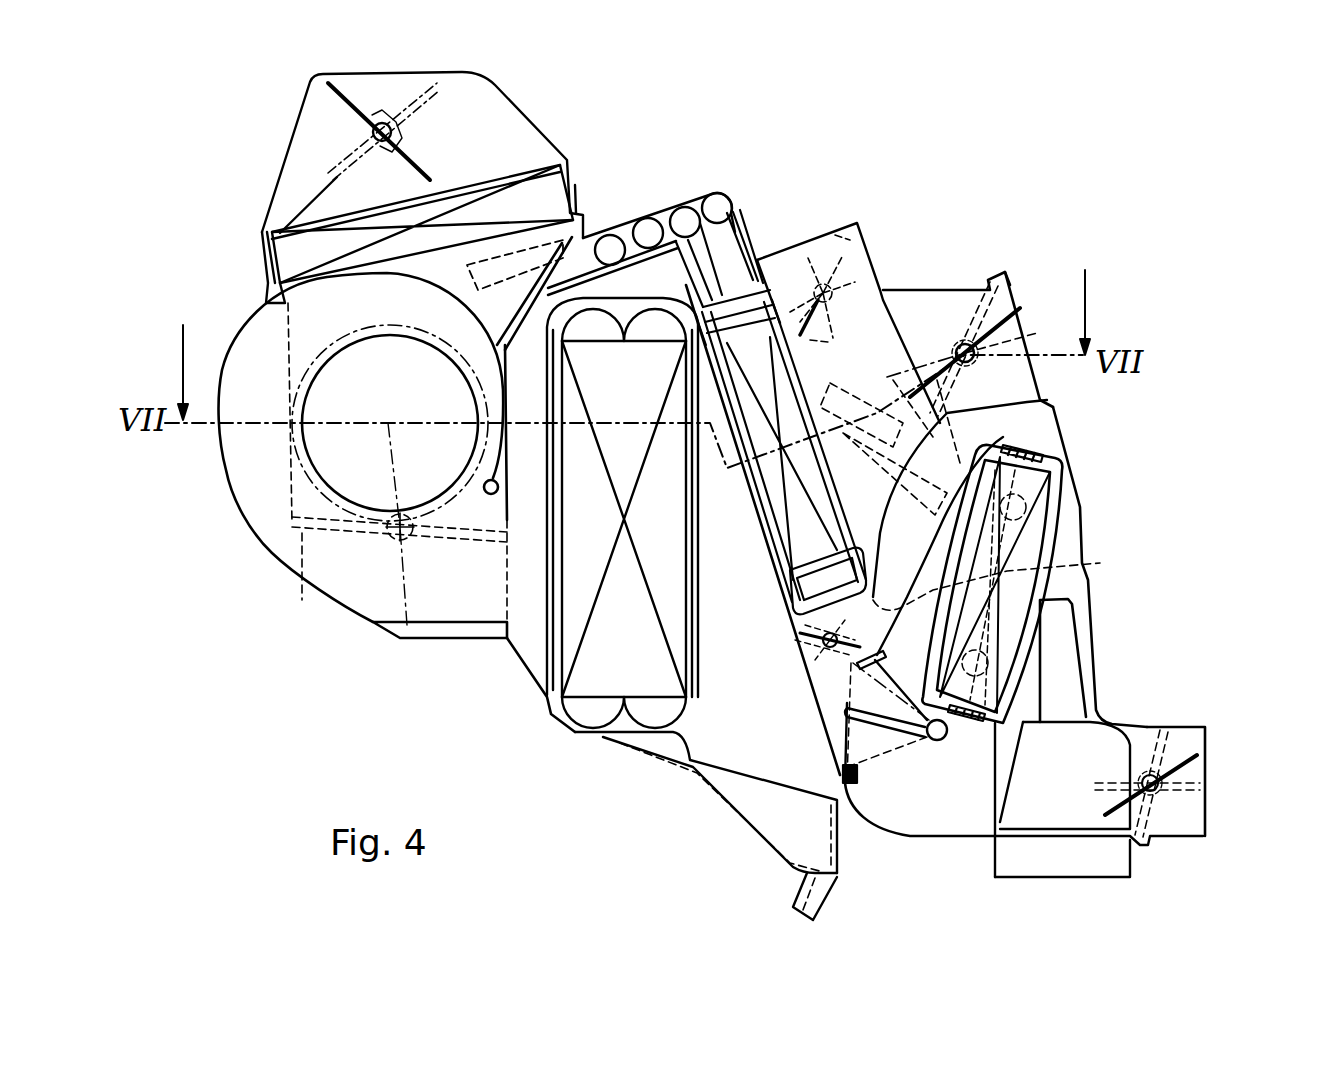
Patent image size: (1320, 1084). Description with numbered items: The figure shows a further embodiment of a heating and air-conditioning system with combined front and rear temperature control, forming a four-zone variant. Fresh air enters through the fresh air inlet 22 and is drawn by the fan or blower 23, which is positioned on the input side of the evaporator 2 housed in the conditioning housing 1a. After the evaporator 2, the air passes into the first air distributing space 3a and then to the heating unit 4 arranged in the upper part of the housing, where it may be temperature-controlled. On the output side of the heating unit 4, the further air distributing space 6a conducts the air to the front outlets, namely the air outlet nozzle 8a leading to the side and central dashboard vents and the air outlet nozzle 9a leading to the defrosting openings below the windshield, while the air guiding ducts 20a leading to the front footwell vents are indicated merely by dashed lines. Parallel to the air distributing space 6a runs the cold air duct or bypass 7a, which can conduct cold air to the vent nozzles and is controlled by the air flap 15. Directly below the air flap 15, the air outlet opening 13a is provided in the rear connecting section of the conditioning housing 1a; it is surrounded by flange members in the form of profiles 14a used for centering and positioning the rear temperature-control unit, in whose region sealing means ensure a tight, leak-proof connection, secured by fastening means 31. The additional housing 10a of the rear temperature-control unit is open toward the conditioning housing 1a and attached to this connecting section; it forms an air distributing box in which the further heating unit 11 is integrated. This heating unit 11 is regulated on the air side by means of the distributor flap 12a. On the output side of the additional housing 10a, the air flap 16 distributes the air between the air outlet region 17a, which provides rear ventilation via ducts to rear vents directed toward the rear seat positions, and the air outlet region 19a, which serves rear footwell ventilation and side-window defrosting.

The conditioning housing 1a is at (675, 738).
The evaporator 2 is at (622, 513).
The first air distributing space 3a is at (725, 465).
The heating unit 4 is at (772, 487).
The further air distributing space 6a is at (876, 330).
The cold air duct or bypass 7a is at (933, 517).
The air outlet nozzle 8a is at (1010, 283).
The air outlet nozzle 9a is at (783, 240).
The additional housing 10a is at (1100, 642).
The further heating unit 11 is at (1020, 588).
The distributor flap 12a is at (932, 747).
The air outlet opening 13a is at (830, 727).
The flange members or profiles 14a is at (1000, 438).
The air flap 15 is at (820, 650).
The air flap 16 is at (1205, 768).
The air outlet region 17a is at (1190, 812).
The air outlet region 19a is at (1043, 855).
The air guiding ducts 20a is at (1015, 578).
The fresh air inlet 22 is at (283, 158).
The fan or blower 23 is at (255, 325).
The fastening means 31 is at (878, 800).